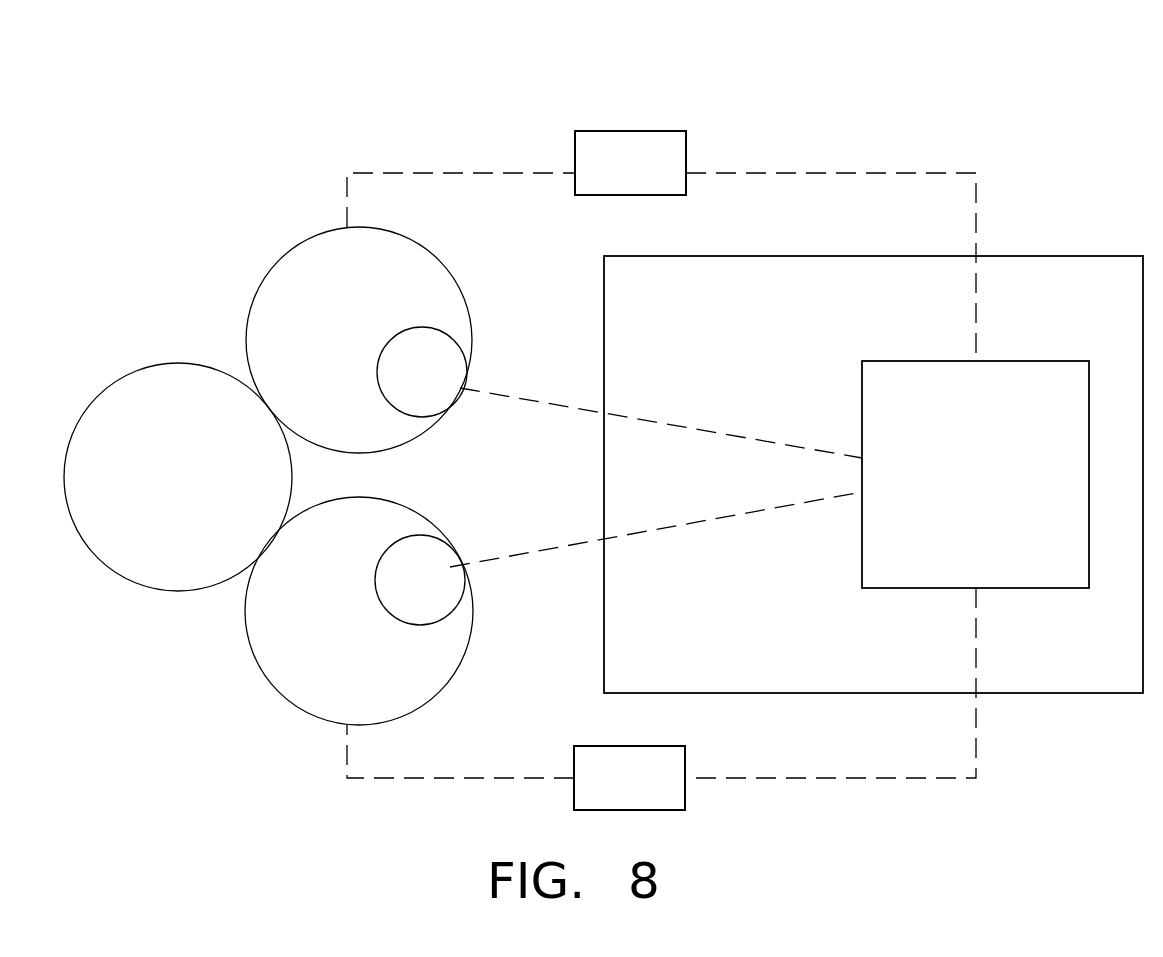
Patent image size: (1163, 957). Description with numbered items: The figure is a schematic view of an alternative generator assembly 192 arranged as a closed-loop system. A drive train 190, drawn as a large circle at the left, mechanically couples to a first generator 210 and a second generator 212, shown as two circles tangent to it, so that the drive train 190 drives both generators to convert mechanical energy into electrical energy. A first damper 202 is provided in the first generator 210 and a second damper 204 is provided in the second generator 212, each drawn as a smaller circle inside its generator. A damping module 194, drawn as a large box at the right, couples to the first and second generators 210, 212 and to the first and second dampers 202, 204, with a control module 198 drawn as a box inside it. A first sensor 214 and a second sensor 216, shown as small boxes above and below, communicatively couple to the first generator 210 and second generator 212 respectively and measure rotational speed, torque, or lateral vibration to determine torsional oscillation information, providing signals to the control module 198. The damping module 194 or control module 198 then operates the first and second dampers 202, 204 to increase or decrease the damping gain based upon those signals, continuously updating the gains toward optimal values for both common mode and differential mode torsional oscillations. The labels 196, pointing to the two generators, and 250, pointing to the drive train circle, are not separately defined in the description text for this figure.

The generator assembly 192 is at (388, 82).
The camera 196 is at (314, 235).
The damping module 194 is at (893, 256).
The control module 198 is at (951, 487).
The substrate 250 is at (205, 362).
The drive train 190 is at (151, 489).
The first generator 210 is at (308, 387).
The second generator 212 is at (309, 595).
The first damper 202 is at (399, 383).
The second damper 204 is at (396, 597).
The first sensor 214 is at (607, 182).
The second sensor 216 is at (604, 790).